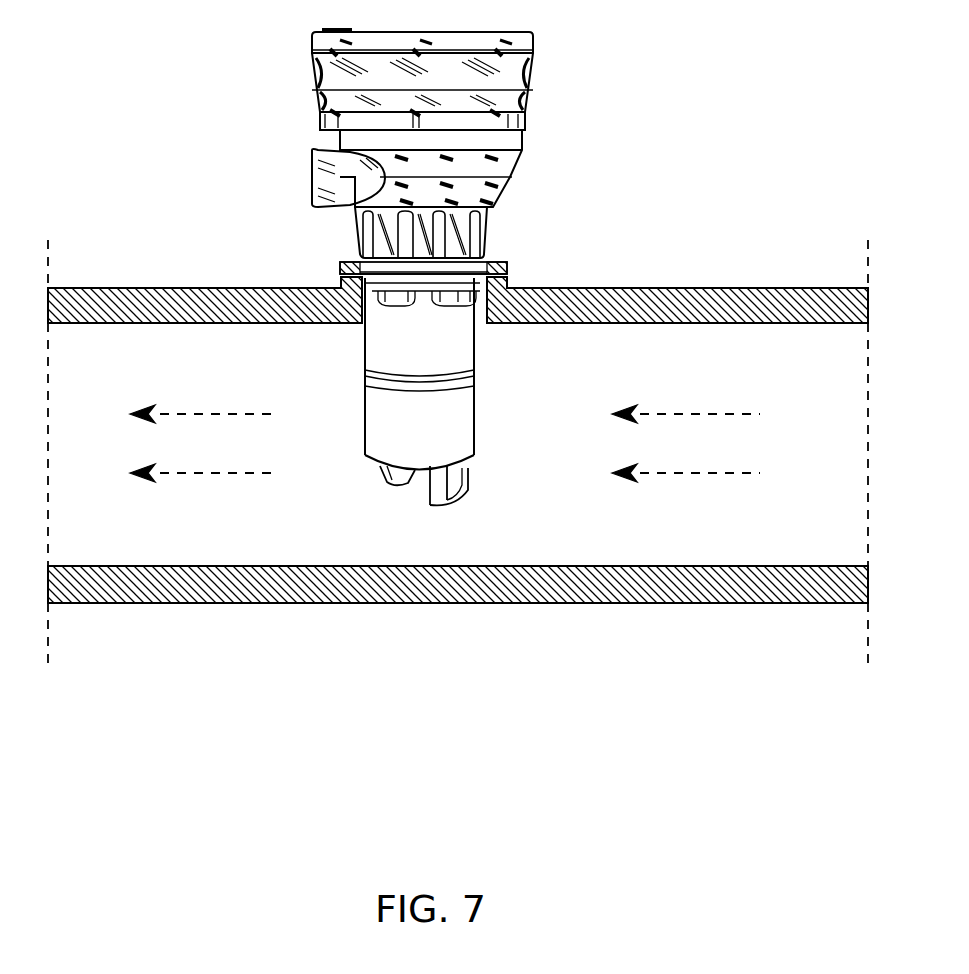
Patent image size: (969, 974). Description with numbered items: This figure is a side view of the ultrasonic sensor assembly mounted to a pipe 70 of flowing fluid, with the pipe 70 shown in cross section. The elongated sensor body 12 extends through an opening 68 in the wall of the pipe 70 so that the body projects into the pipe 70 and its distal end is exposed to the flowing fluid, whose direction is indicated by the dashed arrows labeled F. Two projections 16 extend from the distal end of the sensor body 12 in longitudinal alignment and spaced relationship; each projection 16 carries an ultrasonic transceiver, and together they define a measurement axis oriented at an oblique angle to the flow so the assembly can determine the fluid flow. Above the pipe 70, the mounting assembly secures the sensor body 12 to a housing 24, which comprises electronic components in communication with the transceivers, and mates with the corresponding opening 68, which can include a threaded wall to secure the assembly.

The sensor body 12 is at (462, 408).
The projections 16 is at (384, 487).
The housing 24 is at (520, 143).
The opening 68 is at (508, 272).
The pipe 70 is at (656, 604).